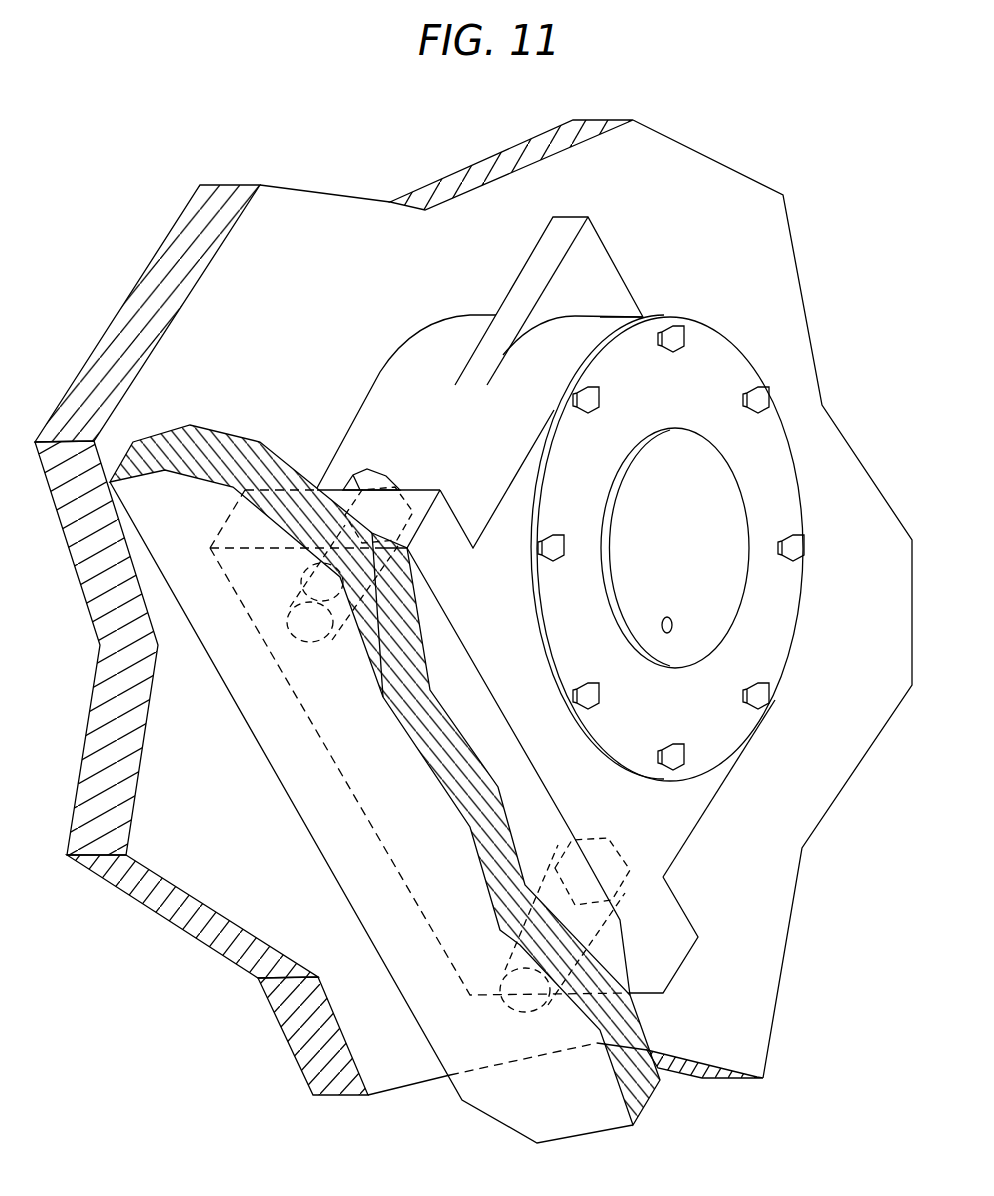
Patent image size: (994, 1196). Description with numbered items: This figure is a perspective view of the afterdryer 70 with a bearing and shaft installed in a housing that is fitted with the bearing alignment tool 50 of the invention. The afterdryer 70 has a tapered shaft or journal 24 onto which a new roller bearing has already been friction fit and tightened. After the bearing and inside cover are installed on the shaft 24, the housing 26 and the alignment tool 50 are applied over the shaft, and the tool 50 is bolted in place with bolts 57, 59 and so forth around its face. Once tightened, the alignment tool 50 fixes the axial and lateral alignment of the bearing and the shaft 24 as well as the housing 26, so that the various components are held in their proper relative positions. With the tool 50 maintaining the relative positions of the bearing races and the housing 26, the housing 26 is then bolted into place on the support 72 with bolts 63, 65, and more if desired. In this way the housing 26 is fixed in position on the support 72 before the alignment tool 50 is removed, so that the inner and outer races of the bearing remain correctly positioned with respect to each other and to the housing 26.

The afterdryer 70 is at (716, 228).
The alignment tool 50 is at (660, 394).
The bolt 57 is at (763, 400).
The bolt 59 is at (800, 548).
The tapered shaft 24 is at (717, 588).
The housing 26 is at (405, 394).
The bolt 65 is at (382, 480).
The support 72 is at (431, 842).
The bolt 63 is at (580, 918).